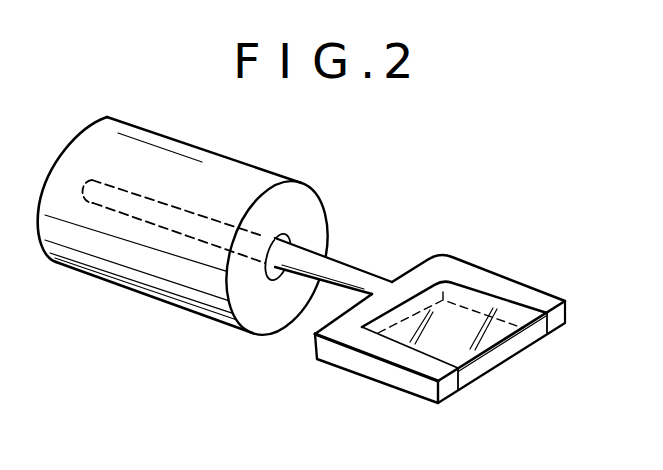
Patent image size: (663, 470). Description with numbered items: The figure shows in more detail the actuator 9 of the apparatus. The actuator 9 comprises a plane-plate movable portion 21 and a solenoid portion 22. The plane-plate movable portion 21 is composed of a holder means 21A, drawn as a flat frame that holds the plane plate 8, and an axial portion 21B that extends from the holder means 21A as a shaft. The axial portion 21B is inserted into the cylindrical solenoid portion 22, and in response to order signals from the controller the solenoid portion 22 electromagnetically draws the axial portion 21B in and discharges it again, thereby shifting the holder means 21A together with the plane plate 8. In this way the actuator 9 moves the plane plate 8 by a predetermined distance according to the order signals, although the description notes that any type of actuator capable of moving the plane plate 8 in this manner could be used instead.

The plane plate 8 is at (500, 362).
The actuator 9 is at (420, 286).
The plane-plate movable portion 21 is at (475, 275).
The holder means 21A is at (405, 383).
The axial portion 21B is at (343, 271).
The solenoid portion 22 is at (170, 290).